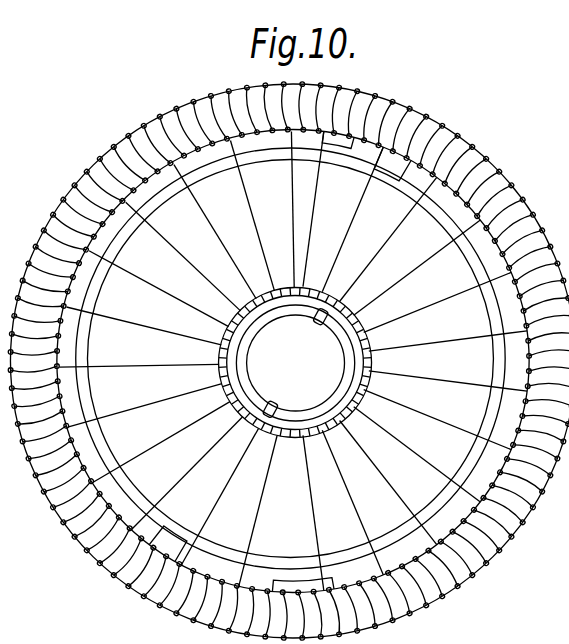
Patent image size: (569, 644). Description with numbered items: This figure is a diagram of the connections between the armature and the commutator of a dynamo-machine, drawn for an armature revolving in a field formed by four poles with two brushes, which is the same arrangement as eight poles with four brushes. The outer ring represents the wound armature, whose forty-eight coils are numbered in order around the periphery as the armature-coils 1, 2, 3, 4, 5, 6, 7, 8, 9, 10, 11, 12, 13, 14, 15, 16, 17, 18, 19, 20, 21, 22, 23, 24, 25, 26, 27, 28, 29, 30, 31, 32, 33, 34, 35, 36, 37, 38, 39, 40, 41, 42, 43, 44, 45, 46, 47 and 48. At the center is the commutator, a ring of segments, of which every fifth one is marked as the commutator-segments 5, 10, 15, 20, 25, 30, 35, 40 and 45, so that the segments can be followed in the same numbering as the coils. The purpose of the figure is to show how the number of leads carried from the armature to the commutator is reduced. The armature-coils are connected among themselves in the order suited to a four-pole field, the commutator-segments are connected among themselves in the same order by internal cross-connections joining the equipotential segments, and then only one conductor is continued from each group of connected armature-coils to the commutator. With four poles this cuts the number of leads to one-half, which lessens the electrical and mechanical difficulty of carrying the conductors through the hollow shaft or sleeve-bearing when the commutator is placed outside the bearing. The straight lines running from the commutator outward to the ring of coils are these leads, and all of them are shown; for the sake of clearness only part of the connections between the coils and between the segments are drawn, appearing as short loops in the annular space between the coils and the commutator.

The armature slot 1 is at (323, 185).
The armature slot 2 is at (361, 121).
The armature slot 3 is at (368, 195).
The armature slot 4 is at (424, 146).
The armature slot 5 / commutator bar 5 is at (409, 216).
The armature slot 6 is at (478, 186).
The armature slot 7 is at (441, 249).
The armature slot 8 is at (517, 238).
The armature slot 9 is at (463, 287).
The armature slot 10 / commutator bar 10 is at (471, 312).
The armature slot 11 is at (469, 332).
The armature slot 12 is at (539, 363).
The armature slot 13 is at (469, 391).
The armature slot 14 is at (534, 428).
The armature slot 15 / commutator bar 15 is at (462, 435).
The armature slot 16 is at (510, 490).
The armature slot 17 is at (440, 474).
The armature slot 18 is at (469, 542).
The armature slot 19 is at (408, 506).
The armature slot 20 / commutator bar 20 is at (389, 520).
The armature slot 21 is at (367, 527).
The armature slot 22 is at (355, 602).
The armature slot 23 is at (321, 537).
The armature slot 24 is at (289, 607).
The armature slot 25 / commutator bar 25 is at (267, 541).
The armature slot 26 is at (241, 535).
The armature slot 27 is at (192, 588).
The armature slot 28 is at (198, 519).
The armature slot 29 is at (133, 555).
The armature slot 30 / commutator bar 30 is at (162, 492).
The armature slot 31 is at (86, 509).
The armature slot 32 is at (134, 456).
The armature slot 33 is at (54, 453).
The armature slot 34 is at (118, 414).
The armature slot 35 / commutator bar 35 is at (111, 388).
The armature slot 36 is at (113, 357).
The armature slot 37 is at (42, 326).
The armature slot 38 is at (118, 310).
The armature slot 39 is at (59, 261).
The armature slot 40 / commutator bar 40 is at (134, 267).
The armature slot 41 is at (93, 205).
The armature slot 42 is at (161, 232).
The armature slot 43 is at (139, 158).
The armature slot 44 is at (198, 205).
The armature slot 45 / commutator bar 45 is at (221, 193).
The armature slot 46 is at (241, 189).
The armature slot 47 is at (262, 113).
The armature slot 48 is at (295, 185).